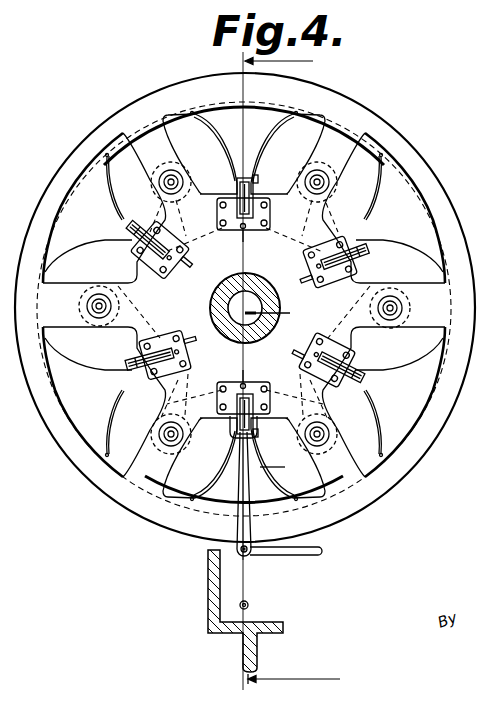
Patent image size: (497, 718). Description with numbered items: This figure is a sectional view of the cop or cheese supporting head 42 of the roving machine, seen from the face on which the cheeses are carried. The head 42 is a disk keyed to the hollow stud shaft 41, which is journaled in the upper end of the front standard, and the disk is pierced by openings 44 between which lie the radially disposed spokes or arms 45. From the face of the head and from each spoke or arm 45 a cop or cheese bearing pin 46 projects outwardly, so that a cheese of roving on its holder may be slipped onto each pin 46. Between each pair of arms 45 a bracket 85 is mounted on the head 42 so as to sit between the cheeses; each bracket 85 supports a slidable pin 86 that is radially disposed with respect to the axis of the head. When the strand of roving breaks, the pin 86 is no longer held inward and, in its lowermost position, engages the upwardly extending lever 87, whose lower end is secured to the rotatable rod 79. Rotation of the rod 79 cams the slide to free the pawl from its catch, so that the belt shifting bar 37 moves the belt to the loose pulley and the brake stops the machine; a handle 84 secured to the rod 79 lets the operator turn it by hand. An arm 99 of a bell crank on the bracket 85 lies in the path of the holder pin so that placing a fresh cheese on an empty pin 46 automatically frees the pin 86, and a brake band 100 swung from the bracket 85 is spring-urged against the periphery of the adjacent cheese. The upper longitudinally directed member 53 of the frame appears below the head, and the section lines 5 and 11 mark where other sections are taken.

The section line 5- 5 is at (292, 366).
The section line 11- 11 is at (287, 384).
The belt shifting bar 37 is at (250, 604).
The hollow stud shaft 41 is at (253, 291).
The cop or cheese supporting head 42 is at (236, 220).
The openings 44 is at (397, 220).
The spokes or arms 45 is at (340, 157).
The cop or cheese bearing pin 46 is at (165, 184).
The longitudinally directed member 53 is at (208, 603).
The rotatable rod 79 is at (241, 551).
The handle 84 is at (311, 553).
The bracket 85 is at (246, 259).
The slidable pin 86 is at (180, 338).
The lever 87 is at (245, 493).
The arm of bell crank 99 is at (310, 398).
The brake band 100 is at (120, 391).